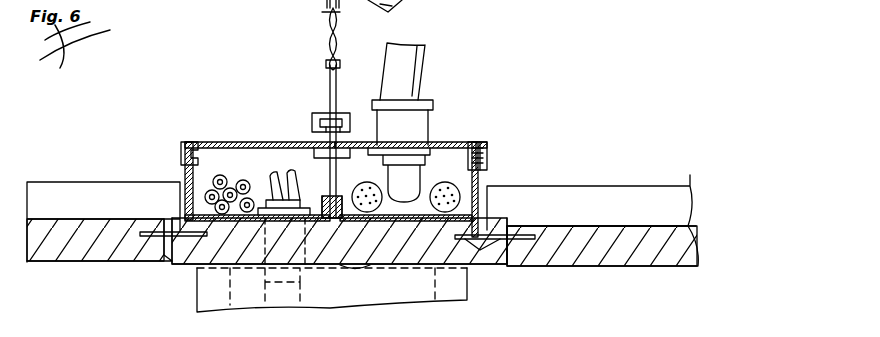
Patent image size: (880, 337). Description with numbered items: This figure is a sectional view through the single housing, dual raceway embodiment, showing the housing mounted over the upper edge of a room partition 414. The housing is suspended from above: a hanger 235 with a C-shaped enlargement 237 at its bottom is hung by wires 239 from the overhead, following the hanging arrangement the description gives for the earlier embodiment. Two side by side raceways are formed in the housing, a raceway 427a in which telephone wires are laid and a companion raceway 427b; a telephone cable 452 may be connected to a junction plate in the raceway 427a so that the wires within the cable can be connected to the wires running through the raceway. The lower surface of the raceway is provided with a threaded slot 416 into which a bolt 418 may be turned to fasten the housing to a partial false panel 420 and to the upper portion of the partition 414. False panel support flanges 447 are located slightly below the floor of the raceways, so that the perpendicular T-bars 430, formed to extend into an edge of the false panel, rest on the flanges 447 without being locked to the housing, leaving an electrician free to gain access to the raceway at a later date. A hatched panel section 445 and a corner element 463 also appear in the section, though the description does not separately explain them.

The chain 239 is at (322, 36).
The rod 235 is at (330, 90).
The bracket 237 is at (354, 115).
The telephone cable 452 is at (413, 65).
The raceway 427a is at (454, 155).
The left chamber 427b is at (238, 158).
The corner clip 463 is at (159, 157).
The threaded slot 416 is at (338, 198).
The partial false panel 420 is at (448, 228).
The perpendicular T-bars 430 is at (552, 197).
The hatched base 445 is at (675, 238).
The false panel support flanges 447 is at (493, 245).
The partition 414 is at (470, 290).
The bolt 418 is at (353, 263).